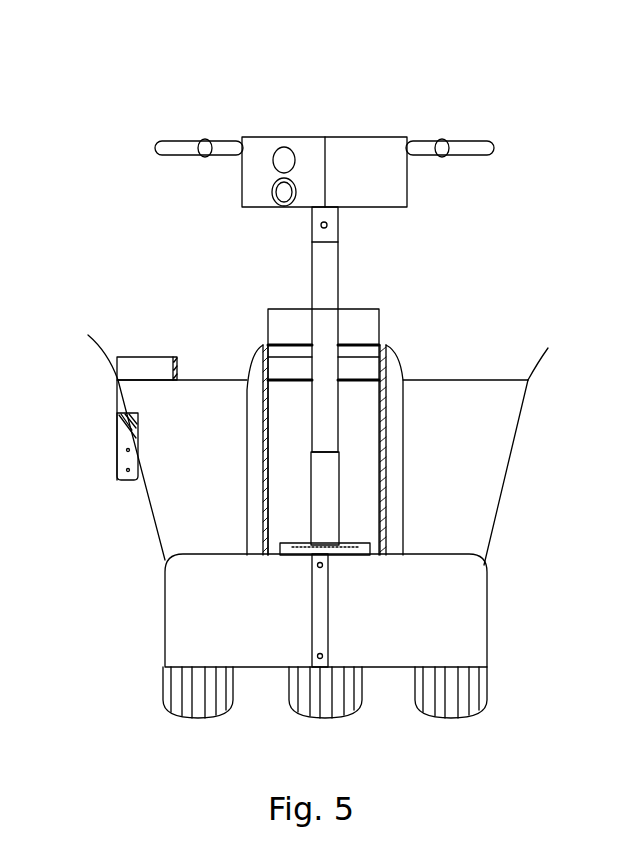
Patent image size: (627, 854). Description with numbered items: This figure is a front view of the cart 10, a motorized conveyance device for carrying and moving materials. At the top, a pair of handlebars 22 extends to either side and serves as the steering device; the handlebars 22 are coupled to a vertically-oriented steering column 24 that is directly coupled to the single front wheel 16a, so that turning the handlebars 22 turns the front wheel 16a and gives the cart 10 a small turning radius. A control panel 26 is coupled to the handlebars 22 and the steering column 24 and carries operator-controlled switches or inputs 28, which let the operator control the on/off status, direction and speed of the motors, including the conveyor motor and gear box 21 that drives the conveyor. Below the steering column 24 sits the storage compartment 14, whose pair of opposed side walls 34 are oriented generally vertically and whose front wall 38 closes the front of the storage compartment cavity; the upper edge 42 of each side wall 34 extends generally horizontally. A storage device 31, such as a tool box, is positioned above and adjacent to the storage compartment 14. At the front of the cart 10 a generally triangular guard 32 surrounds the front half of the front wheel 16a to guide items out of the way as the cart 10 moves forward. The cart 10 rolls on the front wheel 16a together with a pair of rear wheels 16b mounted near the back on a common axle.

The cart 10 is at (516, 101).
The storage compartment 14 is at (500, 350).
The front wheel 16a is at (330, 710).
The rear wheels 16b is at (198, 708).
The conveyor motor and gear box 21 is at (115, 435).
The handlebars 22 is at (181, 143).
The steering column 24 is at (332, 272).
The control panel 26 is at (283, 137).
The inputs 28 is at (366, 116).
The storage device 31 is at (290, 320).
The guard 32 is at (205, 615).
The side walls 34 is at (150, 512).
The front wall 38 is at (480, 500).
The upper edge 42 is at (315, 348).